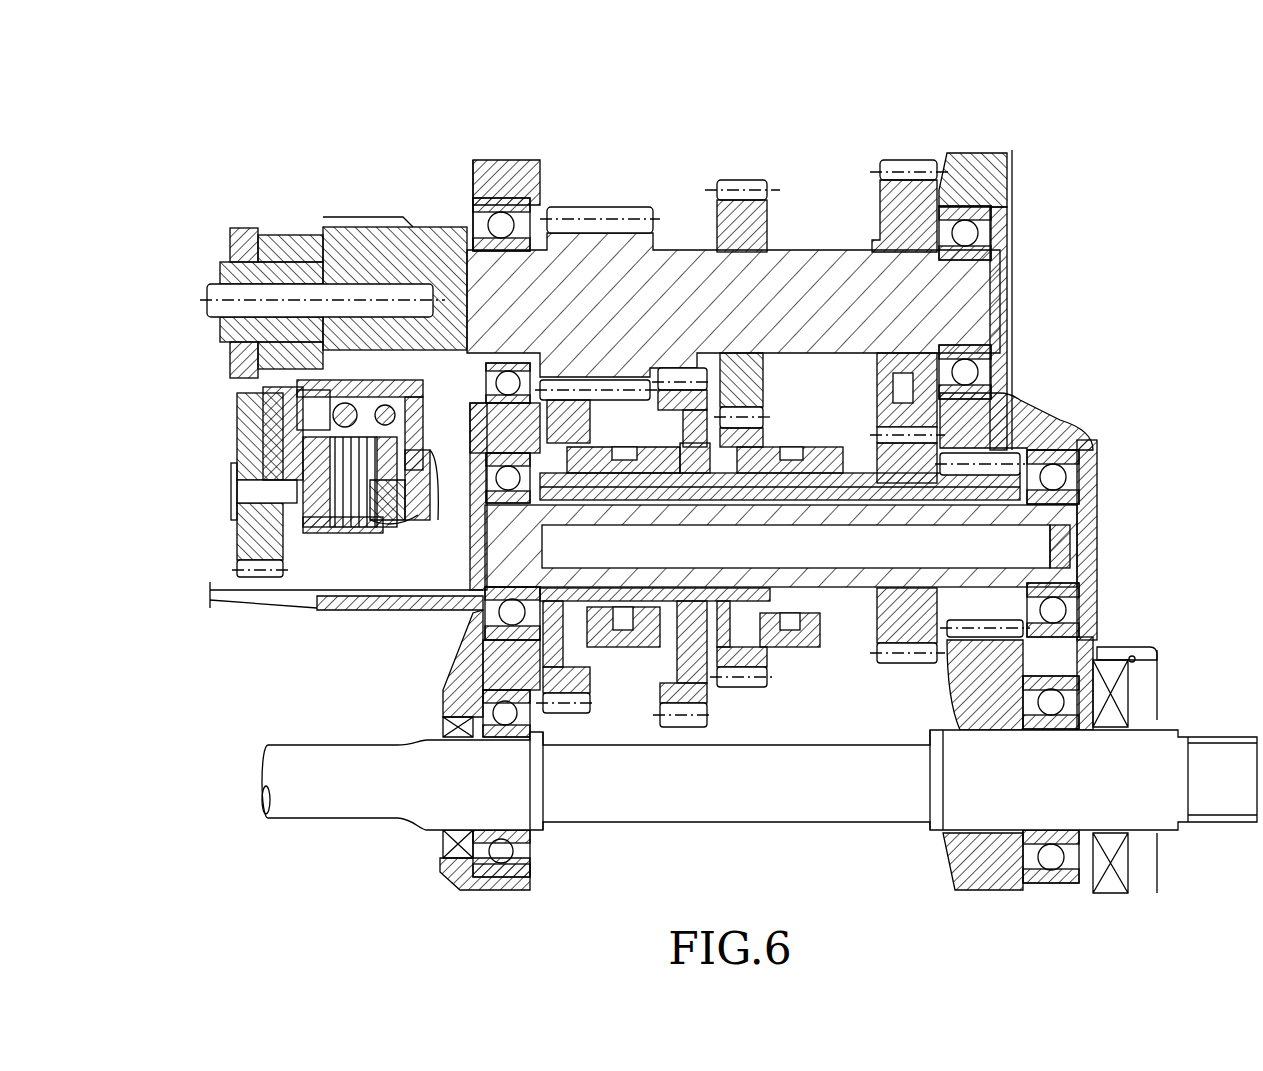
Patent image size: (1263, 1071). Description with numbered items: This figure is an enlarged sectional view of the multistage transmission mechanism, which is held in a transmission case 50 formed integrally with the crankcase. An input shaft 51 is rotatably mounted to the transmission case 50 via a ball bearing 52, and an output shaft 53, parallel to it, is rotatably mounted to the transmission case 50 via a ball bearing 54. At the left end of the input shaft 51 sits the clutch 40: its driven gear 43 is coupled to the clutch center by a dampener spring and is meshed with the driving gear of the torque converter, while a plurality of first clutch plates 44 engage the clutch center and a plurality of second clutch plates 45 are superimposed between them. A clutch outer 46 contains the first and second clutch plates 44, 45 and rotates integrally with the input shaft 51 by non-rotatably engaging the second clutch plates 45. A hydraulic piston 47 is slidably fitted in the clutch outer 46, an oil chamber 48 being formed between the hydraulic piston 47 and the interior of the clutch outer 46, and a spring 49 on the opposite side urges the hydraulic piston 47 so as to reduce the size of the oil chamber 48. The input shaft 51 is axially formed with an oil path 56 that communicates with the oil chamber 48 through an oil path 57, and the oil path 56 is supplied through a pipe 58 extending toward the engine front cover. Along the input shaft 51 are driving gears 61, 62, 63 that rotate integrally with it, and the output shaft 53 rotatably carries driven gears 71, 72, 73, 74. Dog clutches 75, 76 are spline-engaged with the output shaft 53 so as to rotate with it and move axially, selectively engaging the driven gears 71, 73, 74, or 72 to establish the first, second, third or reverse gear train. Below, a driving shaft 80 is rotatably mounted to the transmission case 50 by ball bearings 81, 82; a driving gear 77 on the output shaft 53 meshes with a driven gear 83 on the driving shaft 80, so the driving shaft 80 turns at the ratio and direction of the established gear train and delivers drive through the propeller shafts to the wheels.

The clutch 40 is at (215, 435).
The driven gear 43 is at (237, 568).
The first clutch plates 44 is at (335, 530).
The second clutch plates 45 is at (363, 530).
The clutch outer 46 is at (420, 398).
The hydraulic piston 47 is at (400, 500).
The oil chamber 48 is at (430, 462).
The spring 49 is at (346, 405).
The transmission case 50 is at (1012, 318).
The input shaft 51 is at (975, 288).
The ball bearing 52 is at (530, 214).
The output shaft 53 is at (1068, 512).
The ball bearing 54 is at (1087, 470).
The oil path 56 is at (432, 262).
The oil path 57 is at (417, 240).
The pipe 58 is at (207, 300).
The driving gear 61 is at (634, 210).
The driving gear 62 is at (750, 182).
The driving gear 63 is at (905, 160).
The driven gear 71 is at (595, 412).
The driven gear 72 is at (680, 408).
The driven gear 73 is at (765, 420).
The driven gear 74 is at (878, 445).
The dog clutch 75 is at (640, 650).
The dog clutch 76 is at (815, 655).
The driving gear 77 is at (1040, 440).
The driving shaft 80 is at (738, 822).
The ball bearing 81 is at (460, 880).
The ball bearing 82 is at (1097, 647).
The driven gear 83 is at (947, 677).